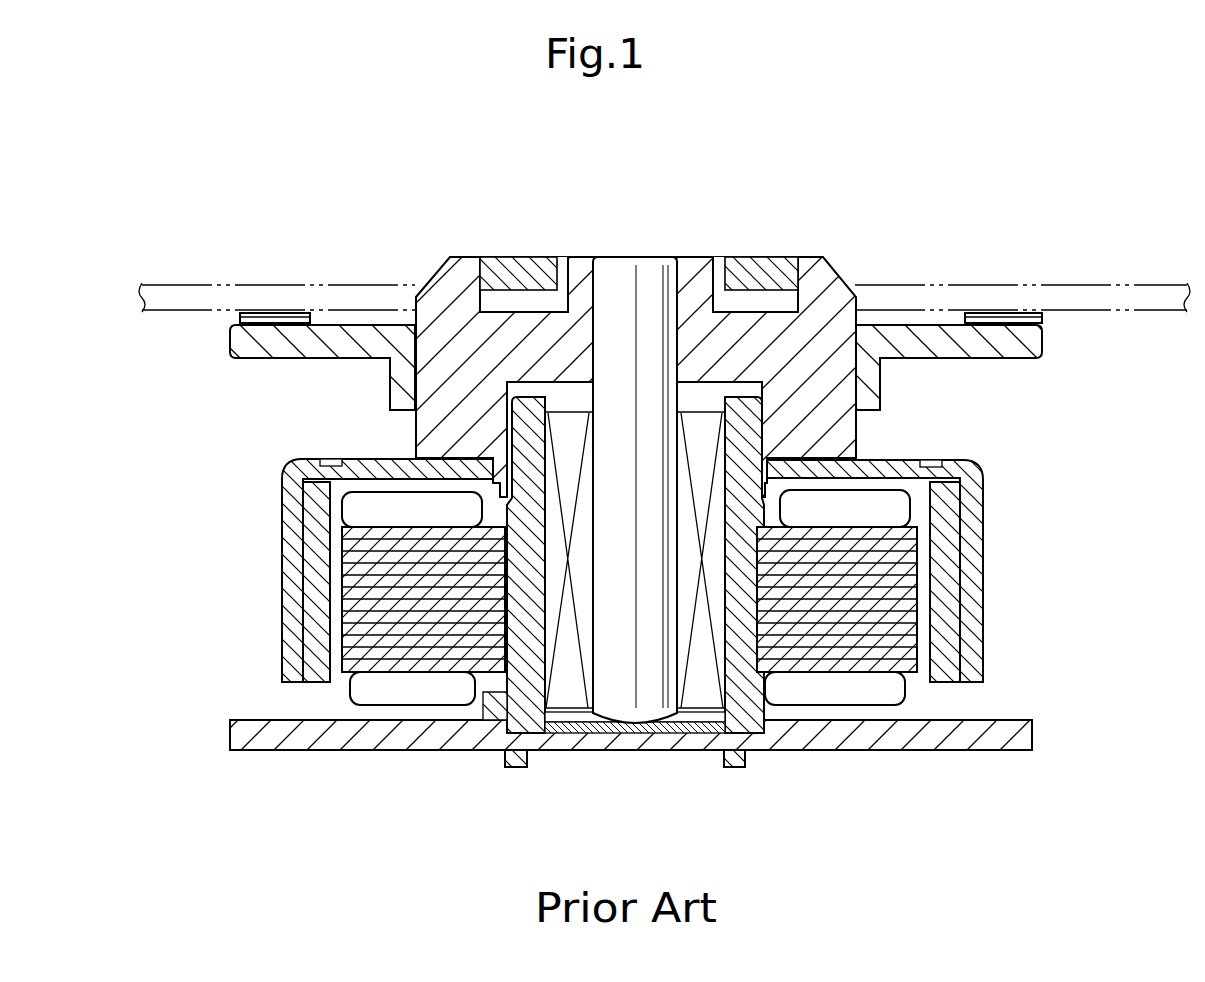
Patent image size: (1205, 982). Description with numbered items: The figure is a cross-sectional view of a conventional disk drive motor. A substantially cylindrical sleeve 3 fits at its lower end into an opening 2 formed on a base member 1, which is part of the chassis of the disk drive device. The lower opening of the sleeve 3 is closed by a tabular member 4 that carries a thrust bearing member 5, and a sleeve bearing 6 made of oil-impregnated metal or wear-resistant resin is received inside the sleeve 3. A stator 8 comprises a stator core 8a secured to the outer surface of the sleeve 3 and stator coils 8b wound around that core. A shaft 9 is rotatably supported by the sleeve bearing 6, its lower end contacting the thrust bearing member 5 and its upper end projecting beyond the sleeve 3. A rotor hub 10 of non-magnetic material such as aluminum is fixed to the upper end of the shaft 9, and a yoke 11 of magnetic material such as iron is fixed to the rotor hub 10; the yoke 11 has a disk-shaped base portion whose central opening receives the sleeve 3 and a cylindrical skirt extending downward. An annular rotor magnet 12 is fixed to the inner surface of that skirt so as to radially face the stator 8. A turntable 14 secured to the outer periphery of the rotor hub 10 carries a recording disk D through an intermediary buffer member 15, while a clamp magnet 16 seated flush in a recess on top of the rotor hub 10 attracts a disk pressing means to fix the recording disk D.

The base member 1 is at (915, 755).
The opening 2 is at (727, 765).
The sleeve 3 is at (457, 750).
The tabular member 4 is at (598, 740).
The thrust bearing member 5 is at (668, 735).
The sleeve bearing 6 is at (558, 697).
The stator 8 is at (912, 505).
The stator core 8a is at (340, 562).
The stator coils 8b is at (380, 500).
The shaft 9 is at (625, 275).
The rotor hub 10 is at (440, 296).
The yoke 11 is at (968, 585).
The rotor magnet 12 is at (303, 638).
The turntable 14 is at (1040, 345).
The buffer member 15 is at (268, 316).
The clamp magnet 16 is at (517, 275).
The recording disk D is at (1090, 283).